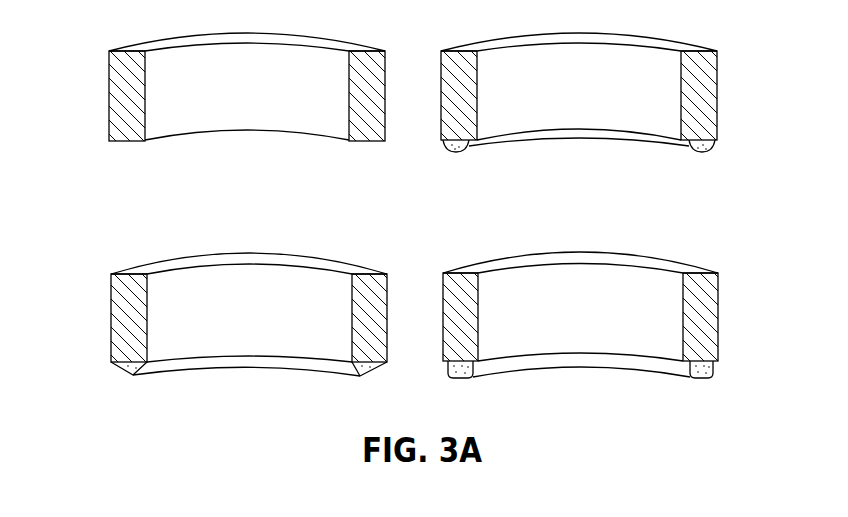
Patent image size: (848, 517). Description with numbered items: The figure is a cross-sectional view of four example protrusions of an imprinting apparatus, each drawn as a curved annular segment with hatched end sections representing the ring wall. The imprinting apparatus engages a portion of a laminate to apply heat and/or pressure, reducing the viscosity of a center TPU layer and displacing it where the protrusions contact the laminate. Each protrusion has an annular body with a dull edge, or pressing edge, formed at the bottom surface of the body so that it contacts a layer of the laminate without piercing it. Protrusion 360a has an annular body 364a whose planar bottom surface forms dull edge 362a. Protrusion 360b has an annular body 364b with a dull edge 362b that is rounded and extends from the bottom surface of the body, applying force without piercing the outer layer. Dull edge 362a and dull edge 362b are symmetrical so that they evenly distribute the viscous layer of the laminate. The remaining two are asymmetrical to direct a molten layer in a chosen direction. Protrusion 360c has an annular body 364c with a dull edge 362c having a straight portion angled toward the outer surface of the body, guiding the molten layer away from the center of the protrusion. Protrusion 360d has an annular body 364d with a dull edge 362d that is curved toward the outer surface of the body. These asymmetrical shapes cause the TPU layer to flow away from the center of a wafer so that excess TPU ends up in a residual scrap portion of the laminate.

The protrusion 360a is at (205, 103).
The annular body 364a is at (108, 88).
The dull edge 362a is at (133, 148).
The protrusion 360b is at (620, 104).
The annular body 364b is at (717, 75).
The dull edge 362b is at (465, 158).
The protrusion 360c is at (207, 330).
The annular body 364c is at (110, 310).
The dull edge 362c is at (353, 390).
The protrusion 360d is at (623, 330).
The annular body 364d is at (718, 310).
The dull edge 362d is at (708, 382).